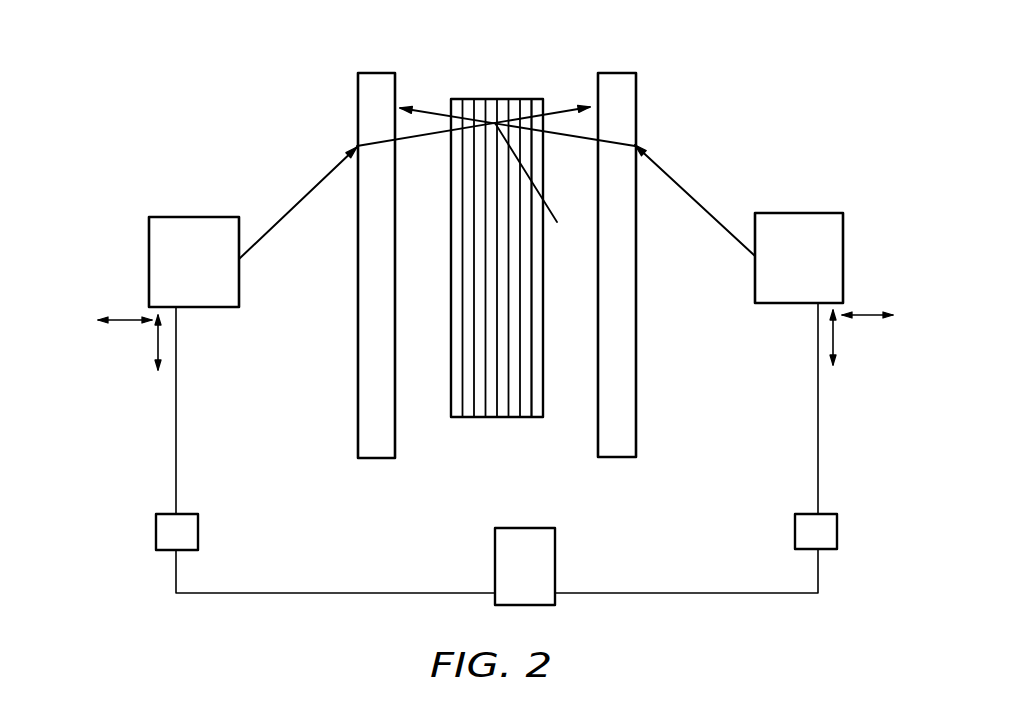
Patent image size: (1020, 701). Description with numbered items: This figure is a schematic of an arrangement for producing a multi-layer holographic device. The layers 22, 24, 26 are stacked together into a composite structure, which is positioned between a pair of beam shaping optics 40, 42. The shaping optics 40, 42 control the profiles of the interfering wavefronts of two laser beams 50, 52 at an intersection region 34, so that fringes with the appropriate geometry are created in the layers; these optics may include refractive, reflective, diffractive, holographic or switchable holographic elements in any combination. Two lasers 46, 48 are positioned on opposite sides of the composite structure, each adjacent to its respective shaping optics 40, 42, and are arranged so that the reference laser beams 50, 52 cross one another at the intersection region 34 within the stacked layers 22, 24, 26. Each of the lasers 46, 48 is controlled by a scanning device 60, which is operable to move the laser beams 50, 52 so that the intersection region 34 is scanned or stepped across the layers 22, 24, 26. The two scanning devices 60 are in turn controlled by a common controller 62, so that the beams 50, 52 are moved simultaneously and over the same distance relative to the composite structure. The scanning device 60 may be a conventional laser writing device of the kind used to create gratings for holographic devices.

The layer 22 is at (463, 100).
The layer 24 is at (495, 123).
The layer 26 is at (537, 100).
The intersection region 34 is at (557, 222).
The beam shaping optics 40 is at (368, 312).
The beam shaping optics 42 is at (622, 313).
The laser 46 is at (208, 264).
The laser 48 is at (815, 257).
The reference laser beam 50 is at (275, 228).
The reference laser beam 52 is at (685, 187).
The scanning device 60 is at (162, 527).
The controller 62 is at (540, 571).